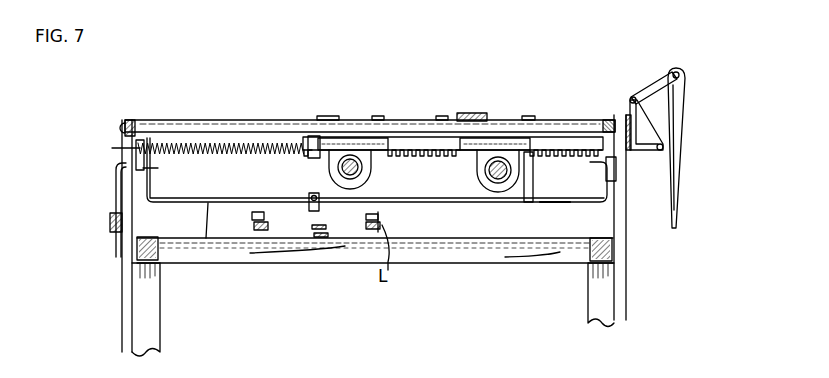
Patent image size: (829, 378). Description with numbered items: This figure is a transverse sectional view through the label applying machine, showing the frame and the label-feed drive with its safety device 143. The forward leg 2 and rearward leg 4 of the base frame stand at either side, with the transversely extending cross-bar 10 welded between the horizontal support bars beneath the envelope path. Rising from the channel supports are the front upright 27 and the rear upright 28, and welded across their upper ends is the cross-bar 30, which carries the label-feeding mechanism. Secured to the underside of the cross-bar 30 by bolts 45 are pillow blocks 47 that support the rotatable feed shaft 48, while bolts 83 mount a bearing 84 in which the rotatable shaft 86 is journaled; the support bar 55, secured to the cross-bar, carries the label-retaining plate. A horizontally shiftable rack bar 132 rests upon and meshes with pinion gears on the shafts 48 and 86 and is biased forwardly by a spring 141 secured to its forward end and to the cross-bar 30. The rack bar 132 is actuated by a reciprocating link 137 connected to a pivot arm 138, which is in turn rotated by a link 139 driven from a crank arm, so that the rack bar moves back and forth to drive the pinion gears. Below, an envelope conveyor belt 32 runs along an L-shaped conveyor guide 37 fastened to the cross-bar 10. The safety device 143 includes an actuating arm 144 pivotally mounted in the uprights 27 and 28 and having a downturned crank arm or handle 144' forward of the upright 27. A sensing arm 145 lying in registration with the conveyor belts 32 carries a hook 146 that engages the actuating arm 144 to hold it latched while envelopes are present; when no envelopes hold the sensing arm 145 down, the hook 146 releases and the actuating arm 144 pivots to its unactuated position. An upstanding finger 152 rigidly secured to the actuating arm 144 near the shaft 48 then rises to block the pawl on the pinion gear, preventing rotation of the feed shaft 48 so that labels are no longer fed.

The leg 2 is at (148, 327).
The leg 4 is at (590, 294).
The cross-bar 10 is at (415, 258).
The upright 27 is at (127, 302).
The upright 28 is at (623, 216).
The cross-bar 30 is at (200, 121).
The conveyor belt 32 is at (335, 222).
The conveyor guide 37 is at (383, 220).
The bolt 45 is at (533, 114).
The pillow block 47 is at (510, 145).
The feed shaft 48 is at (498, 178).
The support bar 55 is at (467, 113).
The bolt 83 is at (321, 116).
The bearing 84 is at (372, 150).
The rotatable shaft 86 is at (349, 160).
The rack bar 132 is at (418, 148).
The reciprocating link 137 is at (645, 150).
The pivot arm 138 is at (659, 80).
The link 139 is at (686, 101).
The spring 141 is at (243, 143).
The safety device 143 is at (553, 208).
The actuating arm 144 is at (223, 255).
The crank arm or handle 144' is at (92, 210).
The sensing arm 145 is at (310, 210).
The hook 146 is at (357, 198).
The upstanding finger 152 is at (536, 166).